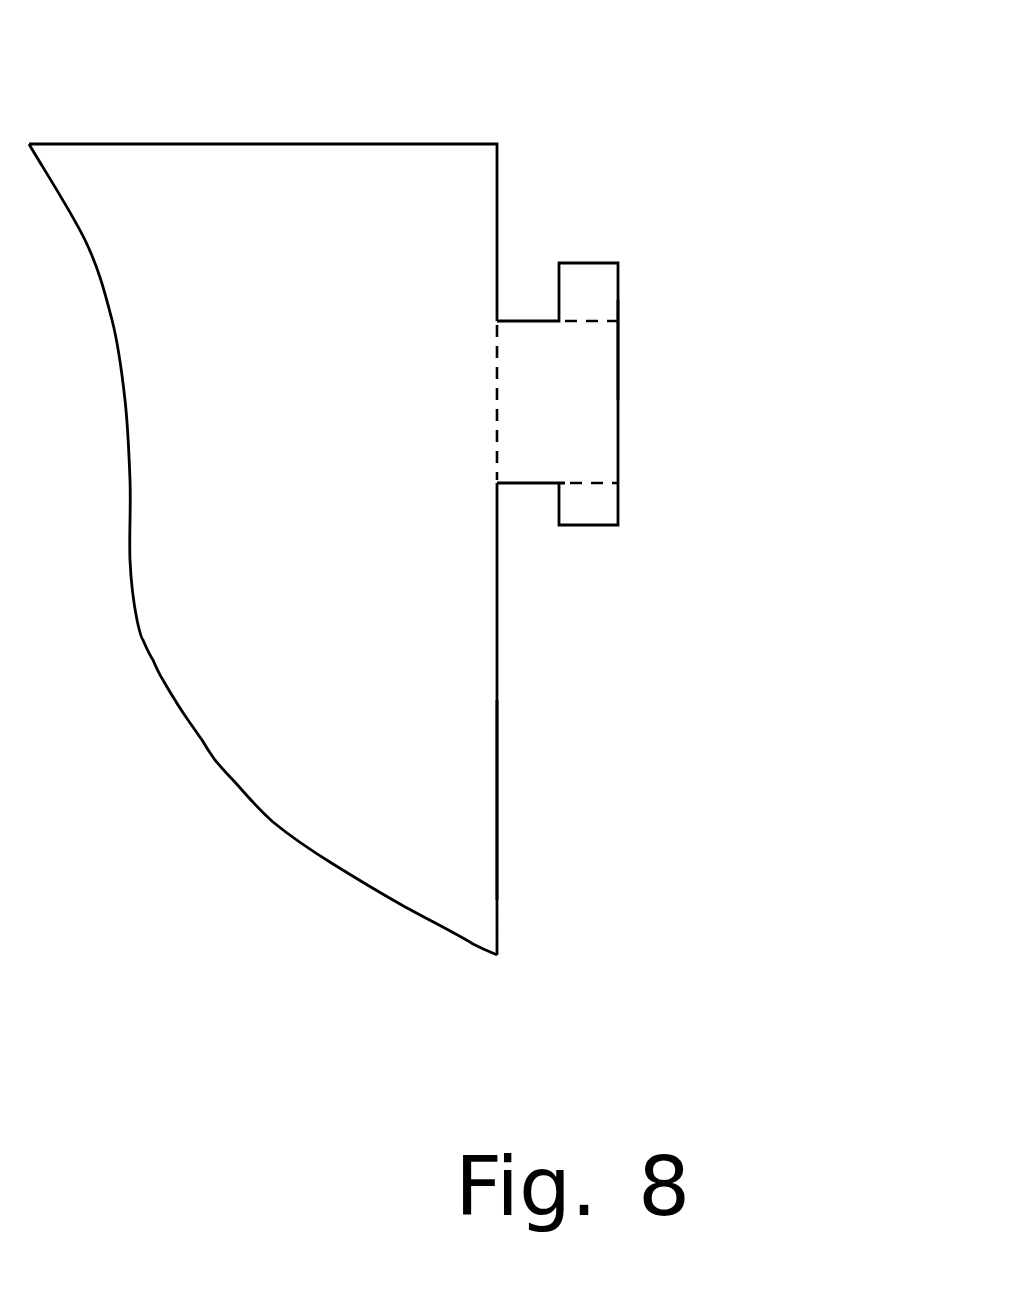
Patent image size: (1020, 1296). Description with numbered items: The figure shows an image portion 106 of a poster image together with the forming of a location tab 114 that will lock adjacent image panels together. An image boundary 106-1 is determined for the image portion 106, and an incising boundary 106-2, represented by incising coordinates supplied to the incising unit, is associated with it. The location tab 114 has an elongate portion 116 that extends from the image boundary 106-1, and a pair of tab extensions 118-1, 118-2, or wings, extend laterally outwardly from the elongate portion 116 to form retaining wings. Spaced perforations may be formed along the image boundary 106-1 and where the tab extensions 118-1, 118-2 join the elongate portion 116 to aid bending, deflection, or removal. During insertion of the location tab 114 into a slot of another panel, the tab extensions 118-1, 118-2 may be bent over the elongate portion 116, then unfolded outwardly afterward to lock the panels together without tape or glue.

The image portion 106 is at (165, 200).
The image boundary 106-1 is at (497, 380).
The incising boundary 106-2 is at (618, 390).
The location tab 114 is at (563, 182).
The elongate portion 116 is at (533, 483).
The tab extension 118-1 is at (618, 293).
The tab extension 118-2 is at (618, 505).